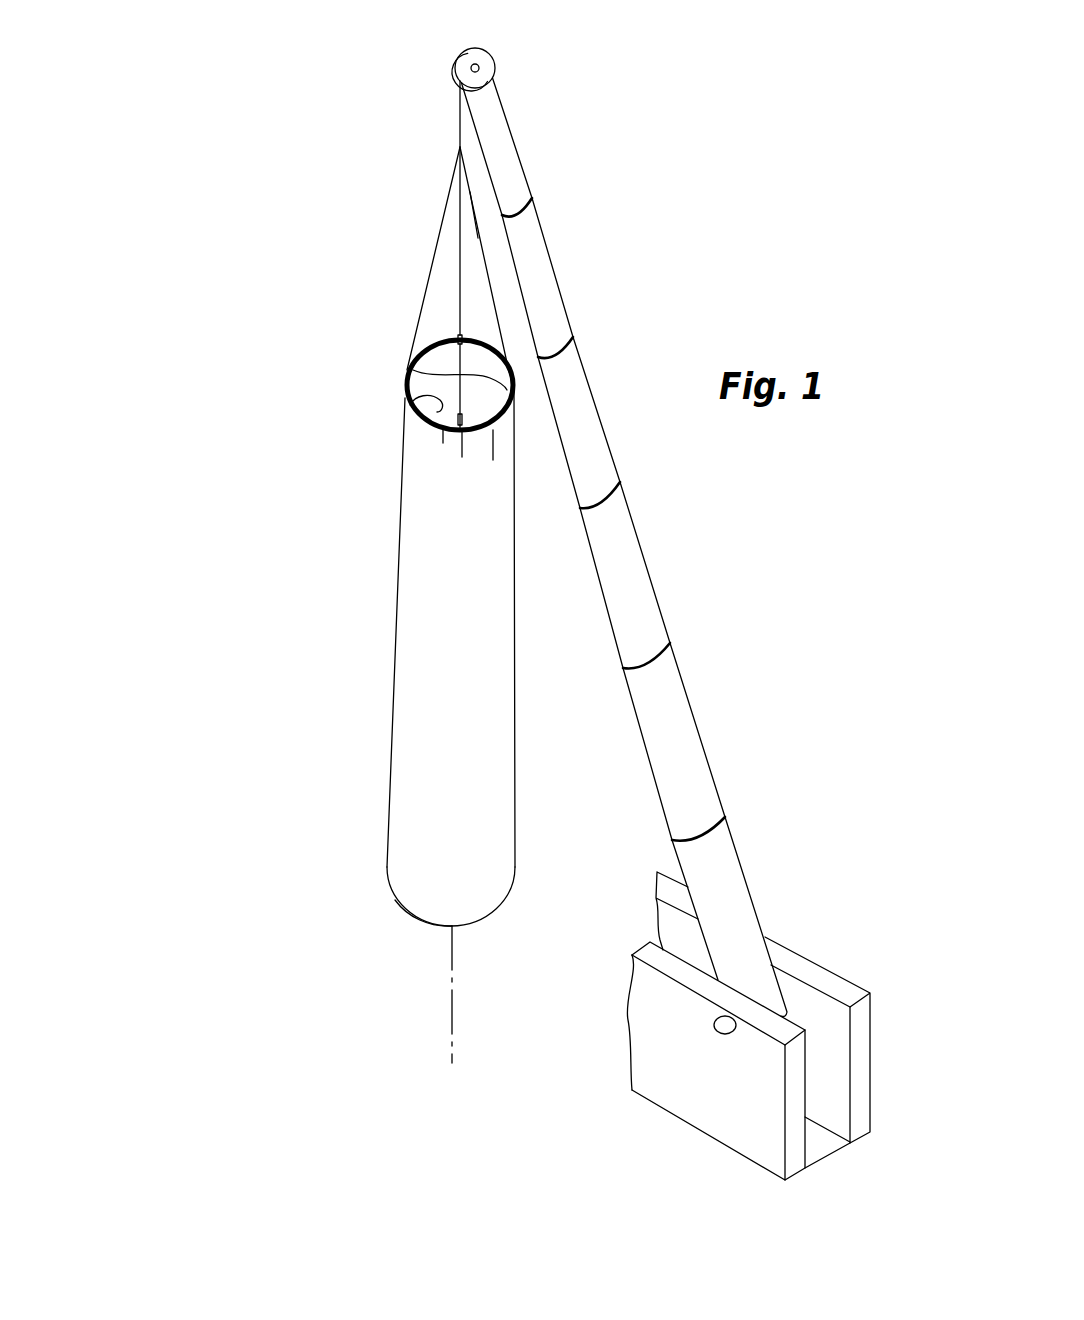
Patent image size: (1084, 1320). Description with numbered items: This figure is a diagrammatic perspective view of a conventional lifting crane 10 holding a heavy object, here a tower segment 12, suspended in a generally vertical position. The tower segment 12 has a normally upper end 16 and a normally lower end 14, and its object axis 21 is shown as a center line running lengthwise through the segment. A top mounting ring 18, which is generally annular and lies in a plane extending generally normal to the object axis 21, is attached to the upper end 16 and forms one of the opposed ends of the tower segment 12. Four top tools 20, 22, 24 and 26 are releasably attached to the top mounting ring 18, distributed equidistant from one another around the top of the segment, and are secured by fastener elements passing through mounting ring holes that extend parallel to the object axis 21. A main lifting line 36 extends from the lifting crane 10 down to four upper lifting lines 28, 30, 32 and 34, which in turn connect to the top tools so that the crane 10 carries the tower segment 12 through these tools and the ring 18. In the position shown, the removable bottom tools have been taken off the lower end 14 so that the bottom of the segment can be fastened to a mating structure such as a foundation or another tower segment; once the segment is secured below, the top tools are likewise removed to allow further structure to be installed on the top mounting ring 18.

The lifting crane 10 is at (830, 827).
The tower segment 12 is at (395, 670).
The normally lower end 14 is at (405, 913).
The normally upper end 16 is at (410, 405).
The top mounting ring 18 is at (443, 443).
The top tool 20 is at (462, 457).
The object axis 21 is at (452, 1010).
The top tool 22 is at (405, 388).
The top tool 24 is at (459, 335).
The top tool 26 is at (410, 367).
The upper lifting line 28 is at (478, 238).
The upper lifting line 30 is at (447, 203).
The upper lifting line 32 is at (460, 147).
The upper lifting line 34 is at (493, 460).
The main lifting line 36 is at (460, 100).